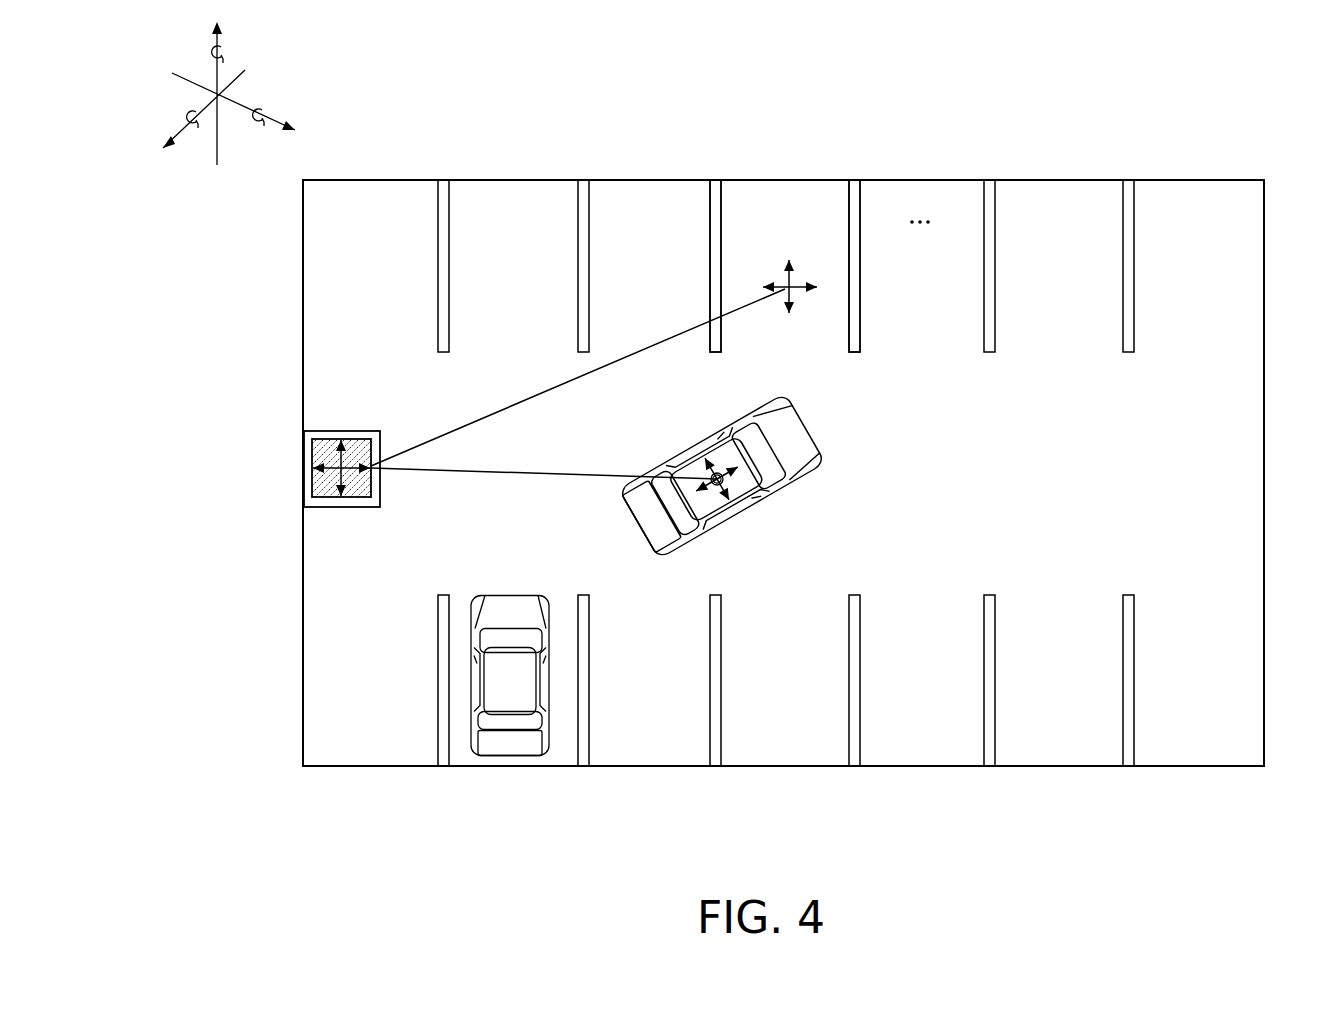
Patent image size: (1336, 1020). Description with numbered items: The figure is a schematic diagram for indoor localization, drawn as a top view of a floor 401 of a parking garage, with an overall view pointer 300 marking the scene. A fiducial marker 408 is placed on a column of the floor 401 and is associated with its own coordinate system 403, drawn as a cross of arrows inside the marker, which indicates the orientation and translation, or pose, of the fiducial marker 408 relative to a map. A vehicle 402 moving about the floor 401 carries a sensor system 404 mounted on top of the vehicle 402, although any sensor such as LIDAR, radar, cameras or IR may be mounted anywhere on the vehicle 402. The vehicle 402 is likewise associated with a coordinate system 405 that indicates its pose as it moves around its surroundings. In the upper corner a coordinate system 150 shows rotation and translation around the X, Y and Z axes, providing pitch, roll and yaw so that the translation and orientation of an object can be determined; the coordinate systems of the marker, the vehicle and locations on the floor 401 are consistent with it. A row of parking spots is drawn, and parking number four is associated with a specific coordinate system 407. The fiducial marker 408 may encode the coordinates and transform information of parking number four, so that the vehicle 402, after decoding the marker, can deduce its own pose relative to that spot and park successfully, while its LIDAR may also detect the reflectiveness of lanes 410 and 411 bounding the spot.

The coordinate system 150 is at (315, 53).
The parking environment 300 is at (1230, 52).
The floor 401 is at (893, 181).
The vehicle 402 is at (802, 418).
The coordinate system 403 is at (341, 443).
The sensor system 404 is at (718, 474).
The coordinate system 405 is at (728, 497).
The coordinate system 407 is at (793, 289).
The fiducial marker 408 is at (325, 439).
The lane 410 is at (710, 290).
The lane 411 is at (860, 287).